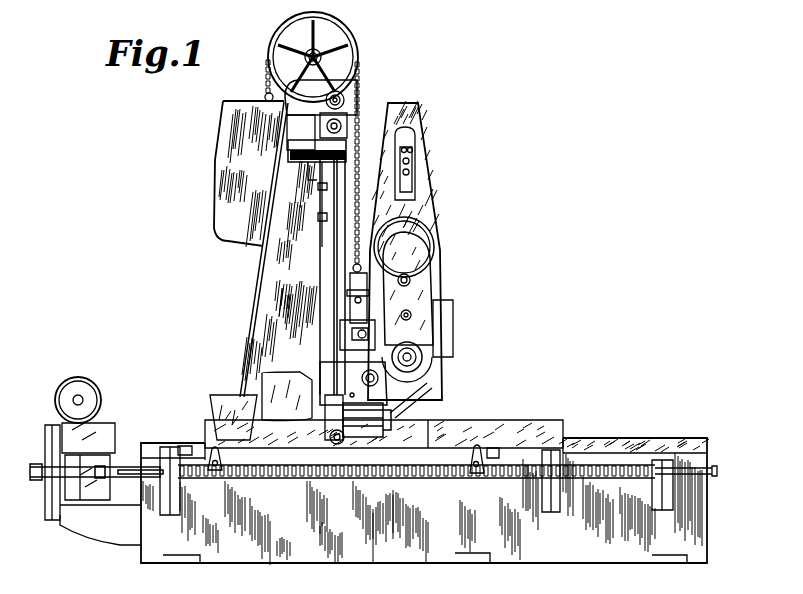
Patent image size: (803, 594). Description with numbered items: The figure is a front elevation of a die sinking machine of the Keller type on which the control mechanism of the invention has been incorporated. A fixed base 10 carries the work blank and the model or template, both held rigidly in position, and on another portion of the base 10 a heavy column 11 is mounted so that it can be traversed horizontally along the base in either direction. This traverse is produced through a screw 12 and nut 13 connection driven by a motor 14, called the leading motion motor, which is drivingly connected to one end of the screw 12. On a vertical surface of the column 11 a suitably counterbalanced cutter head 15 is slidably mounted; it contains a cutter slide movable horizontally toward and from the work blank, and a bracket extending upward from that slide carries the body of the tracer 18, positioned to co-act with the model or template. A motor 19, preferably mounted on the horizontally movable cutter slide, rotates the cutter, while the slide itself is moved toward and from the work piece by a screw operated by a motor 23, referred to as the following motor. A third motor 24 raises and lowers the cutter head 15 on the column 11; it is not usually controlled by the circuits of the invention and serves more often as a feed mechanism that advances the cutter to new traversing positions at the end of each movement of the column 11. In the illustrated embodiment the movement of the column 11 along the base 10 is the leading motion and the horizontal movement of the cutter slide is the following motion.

The fixed base 10 is at (693, 520).
The column 11 is at (262, 337).
The screw 12 is at (300, 483).
The nut 13 is at (458, 472).
The leading motion motor 14 is at (88, 390).
The cutter head 15 is at (347, 280).
The tracer 18 is at (503, 186).
The motor 19 is at (418, 237).
The following motor 23 is at (440, 403).
The third motor 24 is at (300, 133).